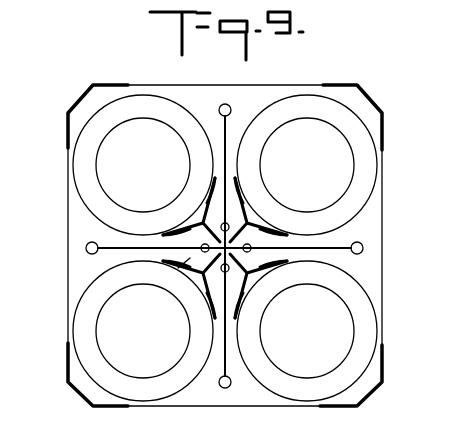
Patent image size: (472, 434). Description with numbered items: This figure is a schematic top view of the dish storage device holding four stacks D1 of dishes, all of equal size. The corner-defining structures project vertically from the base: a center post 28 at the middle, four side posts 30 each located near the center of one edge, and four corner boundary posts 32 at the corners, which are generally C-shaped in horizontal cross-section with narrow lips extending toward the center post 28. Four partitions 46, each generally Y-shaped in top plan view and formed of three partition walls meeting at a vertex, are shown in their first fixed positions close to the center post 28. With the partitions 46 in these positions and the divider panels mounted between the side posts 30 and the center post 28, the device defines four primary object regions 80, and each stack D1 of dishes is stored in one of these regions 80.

The side post 30 is at (229, 104).
The primary object region 80 is at (214, 108).
The partition 46 is at (243, 205).
The stack of dishes D1 is at (82, 183).
The center post 28 is at (178, 268).
The corner boundary post 32 is at (82, 399).